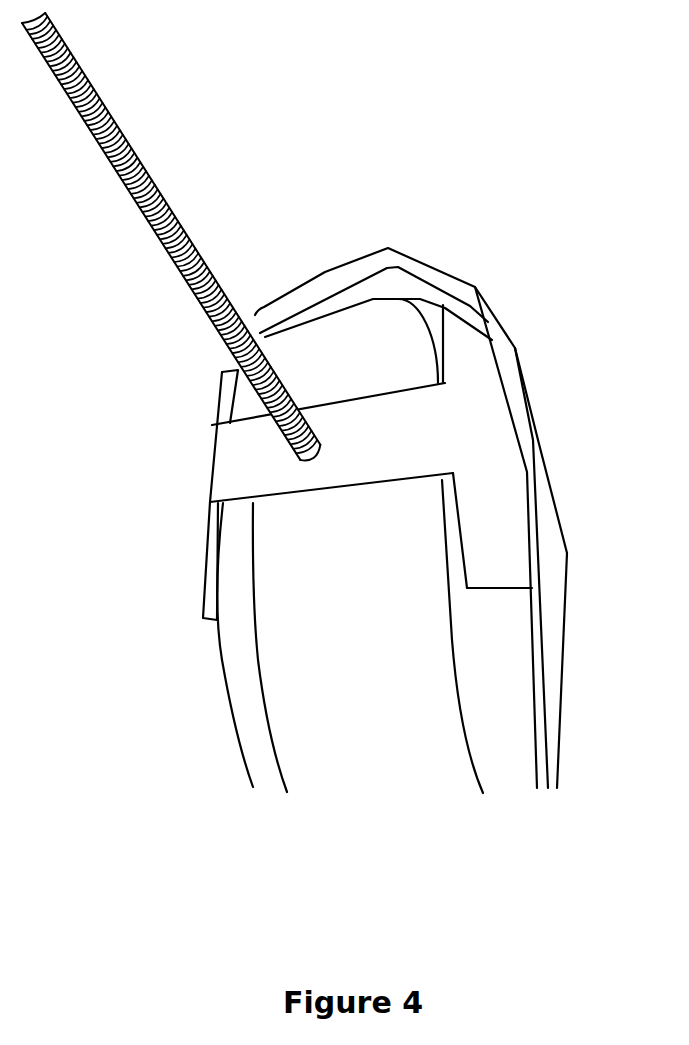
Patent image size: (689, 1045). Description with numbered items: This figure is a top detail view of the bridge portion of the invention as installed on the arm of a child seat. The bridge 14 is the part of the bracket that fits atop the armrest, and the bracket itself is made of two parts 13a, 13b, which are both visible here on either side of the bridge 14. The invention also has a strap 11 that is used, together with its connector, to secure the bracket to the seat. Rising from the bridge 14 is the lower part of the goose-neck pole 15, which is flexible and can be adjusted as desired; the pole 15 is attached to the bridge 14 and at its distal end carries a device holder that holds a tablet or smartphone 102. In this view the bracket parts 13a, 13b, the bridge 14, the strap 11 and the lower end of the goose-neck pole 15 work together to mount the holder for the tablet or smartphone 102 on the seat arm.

The strap 11 is at (512, 370).
The bridge 14 is at (312, 488).
The bracket part 13a is at (213, 537).
The bracket part 13b is at (492, 527).
The tablet or smartphone 102 is at (245, 719).
The goose-neck pole 15 is at (132, 197).